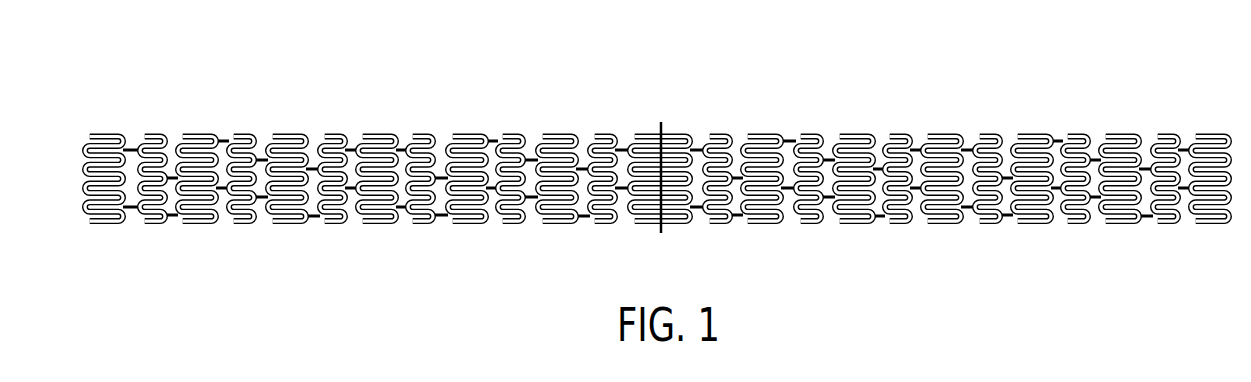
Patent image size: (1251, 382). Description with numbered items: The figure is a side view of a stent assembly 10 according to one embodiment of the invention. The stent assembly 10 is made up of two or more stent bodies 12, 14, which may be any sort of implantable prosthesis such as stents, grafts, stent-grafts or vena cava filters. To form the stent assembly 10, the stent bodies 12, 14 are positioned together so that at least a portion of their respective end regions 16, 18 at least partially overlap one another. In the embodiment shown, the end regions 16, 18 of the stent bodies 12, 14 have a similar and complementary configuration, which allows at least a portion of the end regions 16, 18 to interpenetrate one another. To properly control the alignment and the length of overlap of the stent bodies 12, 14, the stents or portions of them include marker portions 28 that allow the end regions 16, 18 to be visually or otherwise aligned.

The stent assembly 10 is at (657, 153).
The stent body 12 is at (1116, 133).
The stent body 14 is at (288, 133).
The end region 16 is at (686, 222).
The end region 18 is at (664, 140).
The marker portion 28 is at (674, 134).